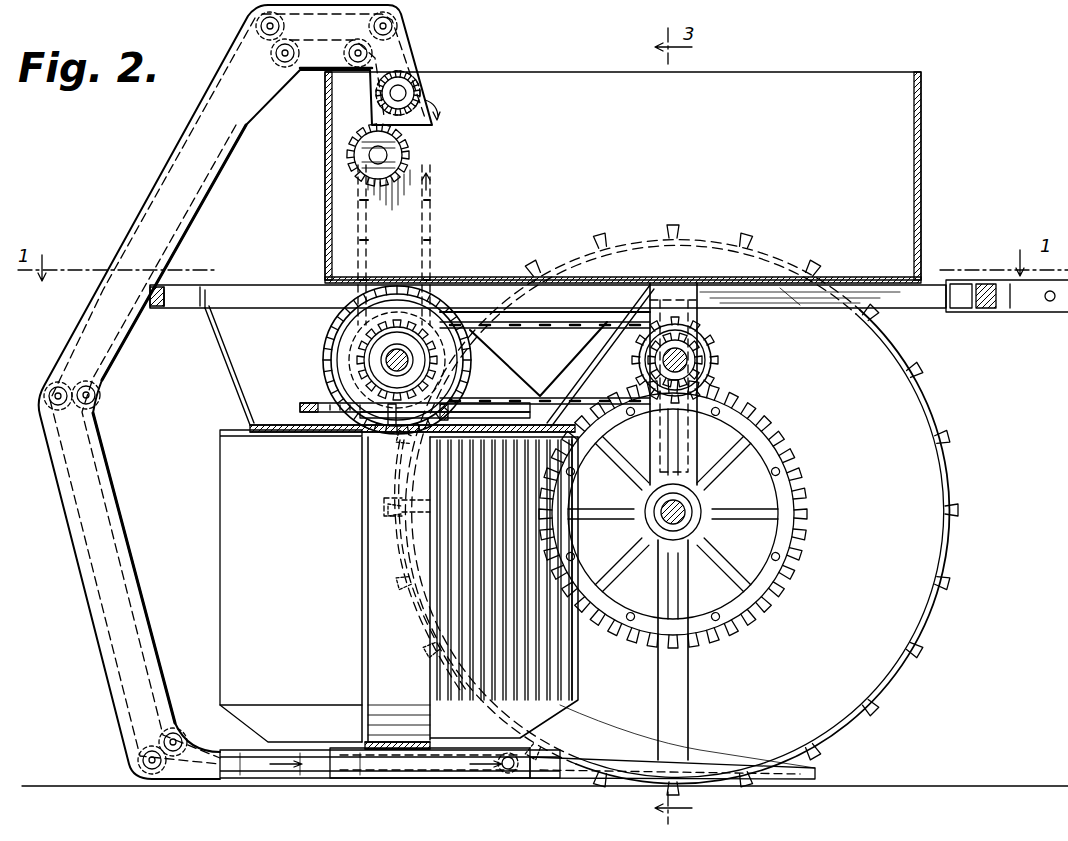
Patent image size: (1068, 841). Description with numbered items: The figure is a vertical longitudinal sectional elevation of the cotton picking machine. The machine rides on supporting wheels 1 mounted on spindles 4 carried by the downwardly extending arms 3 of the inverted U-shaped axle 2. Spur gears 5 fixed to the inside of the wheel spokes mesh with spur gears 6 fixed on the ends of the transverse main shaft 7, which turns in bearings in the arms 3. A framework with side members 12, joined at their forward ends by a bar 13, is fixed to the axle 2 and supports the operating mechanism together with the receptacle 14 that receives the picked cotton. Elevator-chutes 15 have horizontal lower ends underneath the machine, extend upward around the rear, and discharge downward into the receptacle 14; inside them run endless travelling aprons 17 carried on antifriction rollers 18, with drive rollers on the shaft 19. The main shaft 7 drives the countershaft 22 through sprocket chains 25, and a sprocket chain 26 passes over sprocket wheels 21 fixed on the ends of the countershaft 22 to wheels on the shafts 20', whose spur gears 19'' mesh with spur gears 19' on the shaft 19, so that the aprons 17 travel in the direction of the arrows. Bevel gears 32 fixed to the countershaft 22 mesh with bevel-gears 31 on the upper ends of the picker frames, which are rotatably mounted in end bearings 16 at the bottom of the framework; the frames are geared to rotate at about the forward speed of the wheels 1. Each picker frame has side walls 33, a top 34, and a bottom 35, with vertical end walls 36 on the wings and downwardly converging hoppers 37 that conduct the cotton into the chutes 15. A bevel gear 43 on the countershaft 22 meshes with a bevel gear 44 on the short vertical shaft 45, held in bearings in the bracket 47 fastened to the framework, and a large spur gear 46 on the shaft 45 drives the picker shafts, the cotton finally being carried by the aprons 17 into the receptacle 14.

The supporting wheels 1 is at (945, 592).
The axle 2 is at (700, 288).
The downwardly extending arms 3 is at (672, 432).
The spindles 4 is at (660, 512).
The spur gears 5 is at (795, 462).
The spur gears 6 is at (705, 362).
The transverse main shaft 7 is at (690, 356).
The side members 12 is at (800, 295).
The bar 13 is at (960, 300).
The receptacle 14 is at (820, 78).
The elevator-chutes 15 is at (105, 497).
The end bearings 16 is at (412, 750).
The endless travelling aprons 17 is at (245, 755).
The antifriction rollers 18 is at (378, 97).
The shaft 19 is at (414, 69).
The spur gears 19' is at (461, 79).
The spur gears 19'' is at (455, 151).
The shafts 20' is at (345, 167).
The sprocket wheels 21 is at (405, 135).
The countershaft 22 is at (412, 358).
The sprocket chains 25 is at (585, 338).
The sprocket chain 26 is at (433, 232).
The bevel-gears 31 is at (350, 433).
The bevel gears 32 is at (368, 318).
The side walls 33 is at (400, 560).
The top 34 is at (232, 432).
The bottom 35 is at (330, 745).
The vertical end walls 36 is at (372, 605).
The hoppers 37 is at (335, 715).
The bevel gear 43 is at (402, 325).
The bevel gear 44 is at (362, 395).
The short vertical shaft 45 is at (392, 432).
The large spur gear 46 is at (330, 405).
The bracket 47 is at (228, 350).